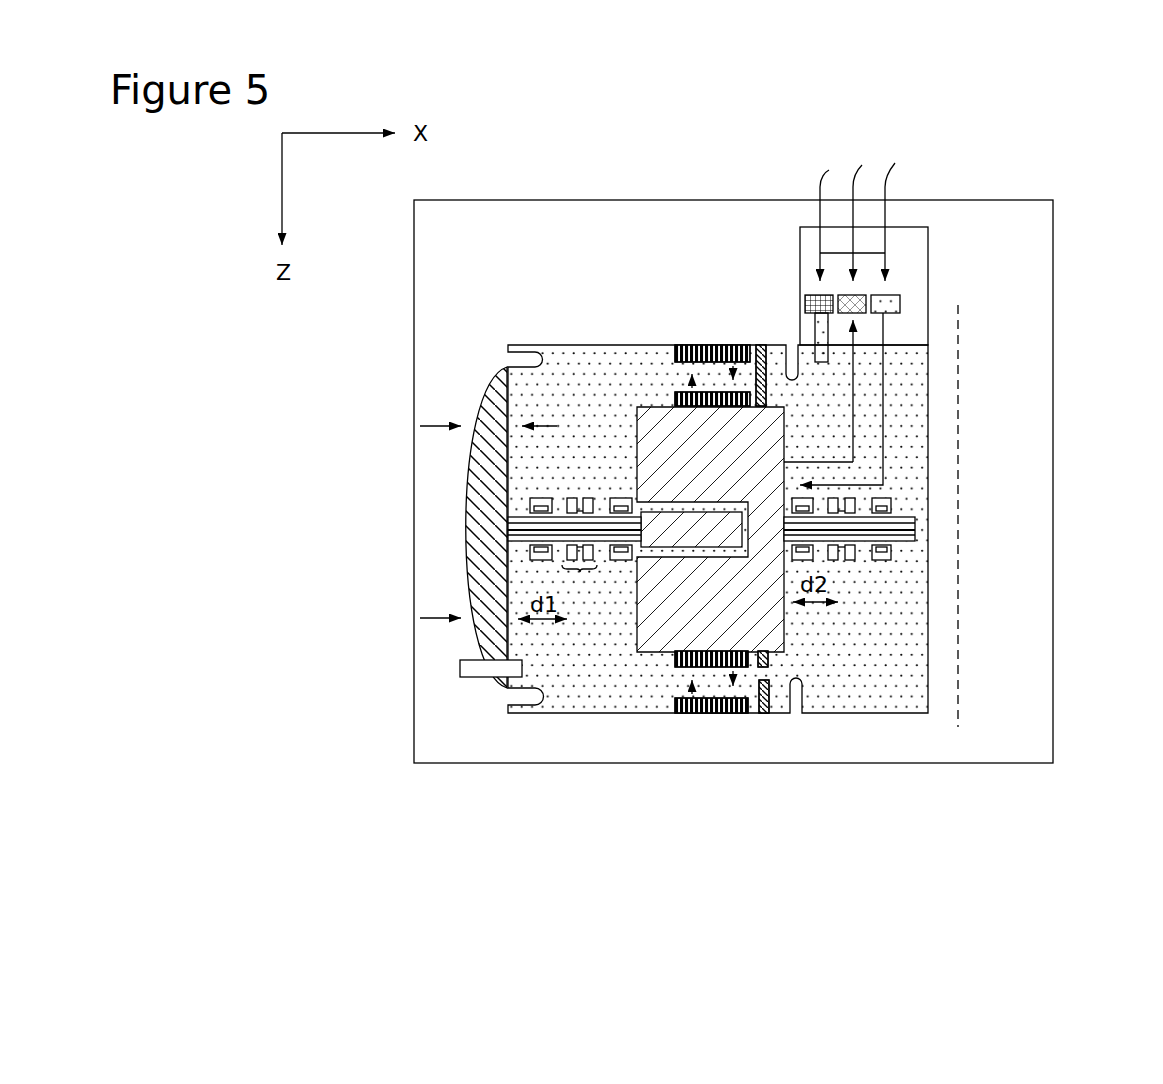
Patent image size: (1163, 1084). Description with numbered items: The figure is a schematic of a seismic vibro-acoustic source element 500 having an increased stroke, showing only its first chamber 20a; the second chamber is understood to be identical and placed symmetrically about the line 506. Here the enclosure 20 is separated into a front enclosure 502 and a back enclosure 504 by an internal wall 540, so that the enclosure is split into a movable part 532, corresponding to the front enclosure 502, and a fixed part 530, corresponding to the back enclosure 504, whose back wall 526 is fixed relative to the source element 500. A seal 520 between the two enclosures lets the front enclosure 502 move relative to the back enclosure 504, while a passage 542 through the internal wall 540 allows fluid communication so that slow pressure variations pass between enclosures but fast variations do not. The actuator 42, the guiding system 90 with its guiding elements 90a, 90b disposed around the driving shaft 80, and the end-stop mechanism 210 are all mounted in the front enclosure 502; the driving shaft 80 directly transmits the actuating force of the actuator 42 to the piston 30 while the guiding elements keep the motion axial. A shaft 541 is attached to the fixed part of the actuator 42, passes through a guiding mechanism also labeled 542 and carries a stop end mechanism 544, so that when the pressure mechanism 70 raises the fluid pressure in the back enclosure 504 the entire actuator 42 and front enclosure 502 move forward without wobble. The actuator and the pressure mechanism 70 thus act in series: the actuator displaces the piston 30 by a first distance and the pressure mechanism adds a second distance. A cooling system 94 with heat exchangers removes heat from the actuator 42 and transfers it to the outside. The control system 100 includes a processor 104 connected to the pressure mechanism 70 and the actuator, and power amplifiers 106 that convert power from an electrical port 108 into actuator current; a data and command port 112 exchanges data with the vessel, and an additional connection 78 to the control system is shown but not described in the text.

The seismic vibro-acoustic source element 500 is at (728, 179).
The enclosure 20 is at (642, 345).
The first chamber 20a is at (915, 840).
The piston 30 is at (641, 545).
The driving shaft 80 is at (548, 533).
The actuator 42 is at (875, 599).
The shaft 541 is at (905, 533).
The front enclosure 502 is at (567, 693).
The internal wall 540 is at (748, 345).
The cooling system 94 is at (697, 713).
The passage 542 is at (764, 670).
The guiding system 90 is at (588, 398).
The guiding element 90a is at (541, 498).
The guiding element 90b is at (620, 498).
The end-stop mechanism 210 is at (582, 572).
The stop end mechanism 544 is at (853, 565).
The control system 100 is at (879, 311).
The pressure mechanism 70 is at (800, 265).
The power input 78 is at (813, 215).
The electrical port 108 is at (851, 211).
The data and command port 112 is at (889, 209).
The processor 104 is at (864, 296).
The power amplifiers 106 is at (900, 298).
The line 506 is at (958, 700).
The movable part 532 is at (660, 713).
The seal 520 is at (806, 695).
The back enclosure 504 is at (847, 704).
The fixed part 530 is at (866, 713).
The back wall 526 is at (930, 668).